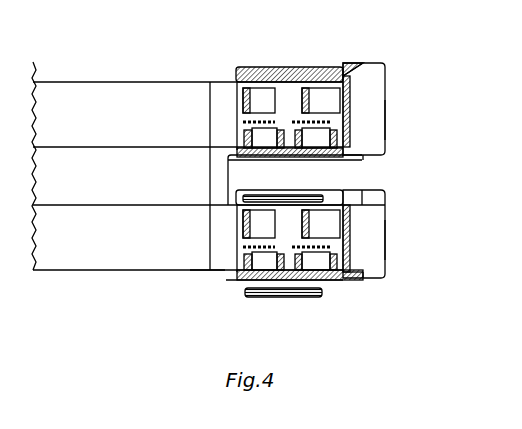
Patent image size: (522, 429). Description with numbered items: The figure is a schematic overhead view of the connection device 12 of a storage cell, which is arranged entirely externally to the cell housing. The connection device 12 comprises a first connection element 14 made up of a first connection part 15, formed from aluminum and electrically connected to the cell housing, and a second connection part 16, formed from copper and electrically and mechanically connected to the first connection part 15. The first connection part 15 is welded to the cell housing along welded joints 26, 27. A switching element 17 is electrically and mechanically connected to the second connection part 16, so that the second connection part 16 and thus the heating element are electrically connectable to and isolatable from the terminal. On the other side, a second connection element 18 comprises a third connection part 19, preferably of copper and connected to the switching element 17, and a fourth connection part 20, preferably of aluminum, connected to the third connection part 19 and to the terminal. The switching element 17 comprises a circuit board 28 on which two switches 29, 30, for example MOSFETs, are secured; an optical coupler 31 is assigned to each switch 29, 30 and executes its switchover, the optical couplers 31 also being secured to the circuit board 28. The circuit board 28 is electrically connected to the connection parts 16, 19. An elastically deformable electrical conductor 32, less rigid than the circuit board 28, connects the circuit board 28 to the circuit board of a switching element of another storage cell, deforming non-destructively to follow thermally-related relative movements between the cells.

The connection device 12 is at (389, 61).
The first connection element 14 is at (392, 141).
The first connection part 15 is at (335, 158).
The second connection part 16 is at (368, 92).
The switching element 17 is at (315, 77).
The second connection element 18 is at (199, 274).
The third connection part 19 is at (221, 93).
The fourth connection part 20 is at (83, 127).
The welded joint 26 is at (301, 204).
The welded joint 27 is at (293, 74).
The circuit board 28 is at (288, 113).
The switch 29 is at (255, 95).
The switch 30 is at (362, 70).
The optical coupler 31 is at (317, 138).
The elastically deformable electrical conductor 32 is at (218, 147).